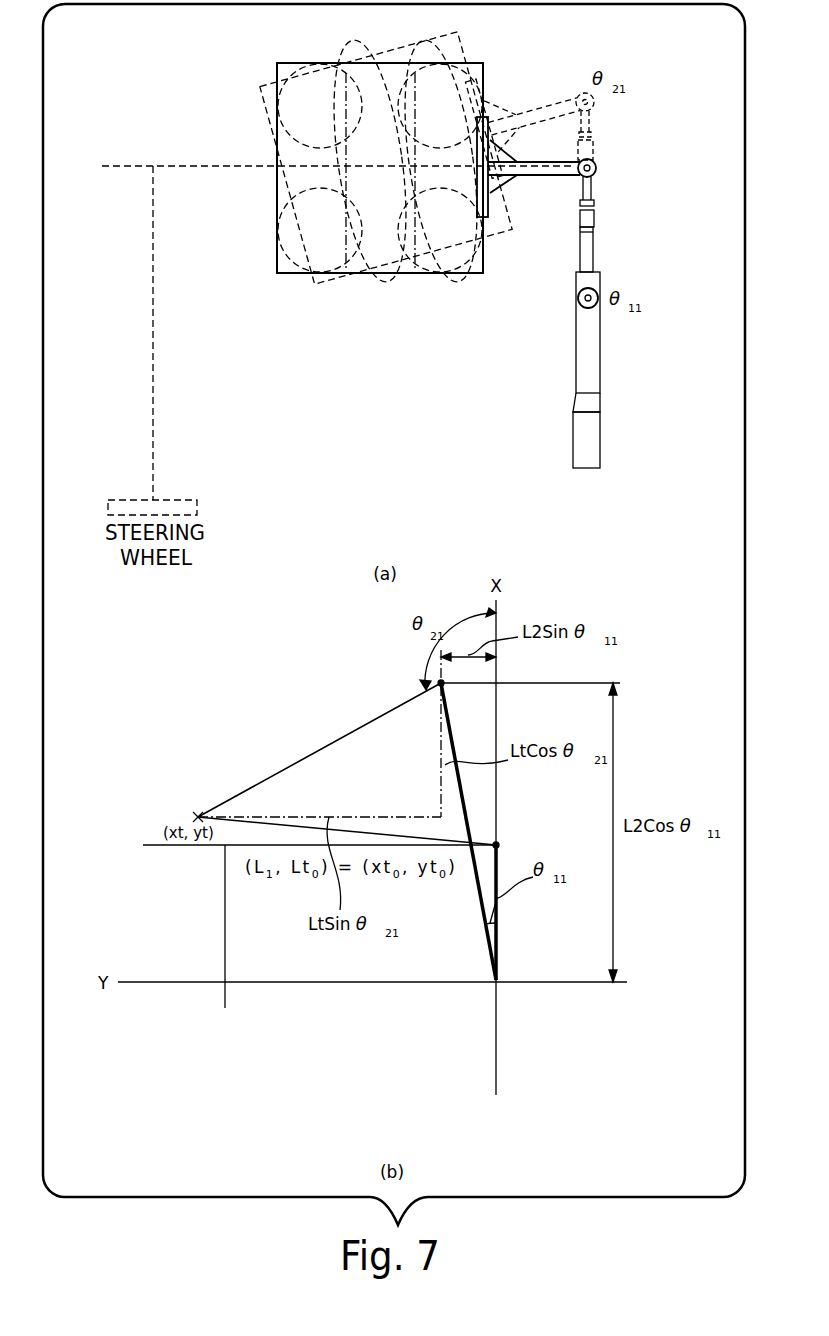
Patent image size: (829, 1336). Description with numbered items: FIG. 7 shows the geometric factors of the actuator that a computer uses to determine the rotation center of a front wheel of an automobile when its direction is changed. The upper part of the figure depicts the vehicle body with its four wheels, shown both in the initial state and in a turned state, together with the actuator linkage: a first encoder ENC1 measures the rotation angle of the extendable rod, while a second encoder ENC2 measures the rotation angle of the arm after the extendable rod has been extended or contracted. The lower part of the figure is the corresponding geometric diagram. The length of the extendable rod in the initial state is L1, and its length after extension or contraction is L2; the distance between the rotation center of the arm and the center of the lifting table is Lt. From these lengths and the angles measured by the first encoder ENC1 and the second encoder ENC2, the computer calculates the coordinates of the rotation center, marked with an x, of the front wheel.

The first encoder ENC1 is at (588, 307).
The second encoder ENC2 is at (598, 168).
The length of the extendable rod in the initial state L1 is at (510, 912).
The length of the extendable rod after extension or contraction L2 is at (468, 831).
The distance between the rotation center of the arm and the center of the lifting ta Lt is at (347, 764).